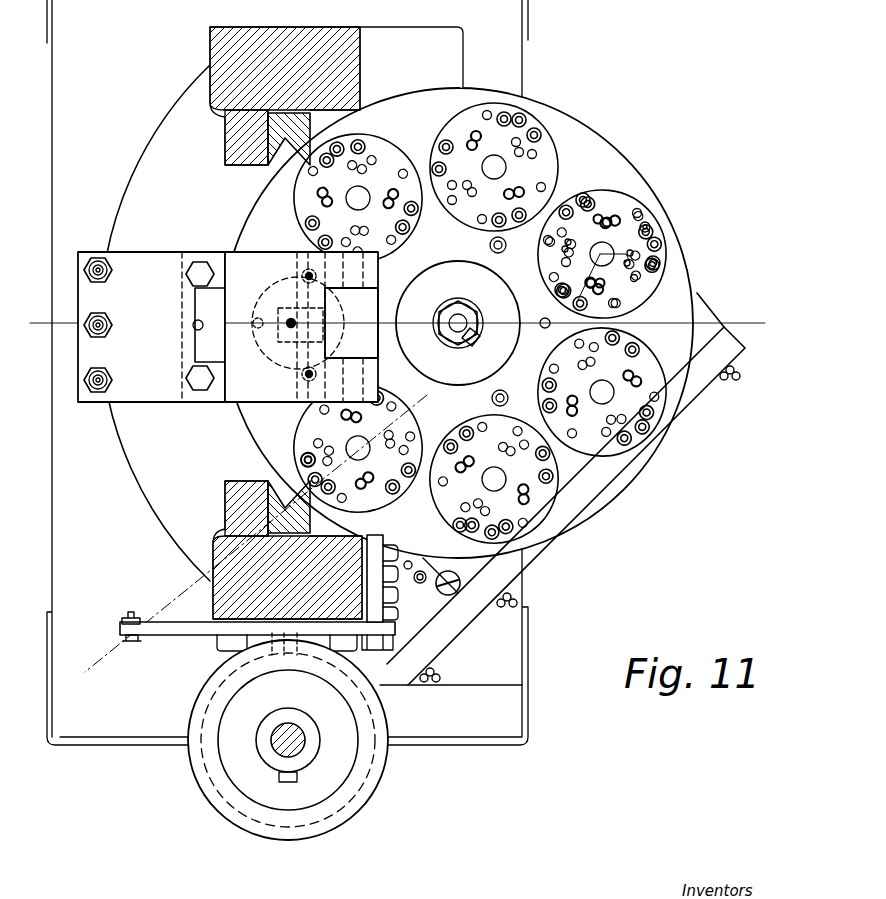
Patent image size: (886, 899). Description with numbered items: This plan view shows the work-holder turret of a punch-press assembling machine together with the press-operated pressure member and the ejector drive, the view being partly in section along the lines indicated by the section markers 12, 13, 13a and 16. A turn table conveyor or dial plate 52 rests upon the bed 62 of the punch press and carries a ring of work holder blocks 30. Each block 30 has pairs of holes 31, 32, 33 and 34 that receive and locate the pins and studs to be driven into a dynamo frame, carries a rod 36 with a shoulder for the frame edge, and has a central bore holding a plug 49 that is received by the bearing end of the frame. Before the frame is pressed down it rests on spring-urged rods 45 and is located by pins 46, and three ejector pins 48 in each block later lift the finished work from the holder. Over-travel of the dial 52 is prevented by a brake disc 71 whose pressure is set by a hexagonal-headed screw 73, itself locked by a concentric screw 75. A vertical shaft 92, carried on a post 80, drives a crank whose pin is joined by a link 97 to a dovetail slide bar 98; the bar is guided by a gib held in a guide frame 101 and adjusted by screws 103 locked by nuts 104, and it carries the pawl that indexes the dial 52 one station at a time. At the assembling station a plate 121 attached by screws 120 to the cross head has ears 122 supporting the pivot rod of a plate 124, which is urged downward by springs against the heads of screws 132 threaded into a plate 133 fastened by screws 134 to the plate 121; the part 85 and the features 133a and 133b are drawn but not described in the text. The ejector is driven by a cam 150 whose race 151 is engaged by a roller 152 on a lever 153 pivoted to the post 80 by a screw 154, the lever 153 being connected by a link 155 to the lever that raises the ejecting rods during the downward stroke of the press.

The section line 12- 12 is at (30, 323).
The section line 13- 13 is at (233, 330).
The section line 13a- 13a is at (673, 320).
The section line 16- 16 is at (427, 395).
The work holder block 30 is at (296, 206).
The holes 31 is at (562, 250).
The holes 32 is at (565, 243).
The holes 33 is at (603, 217).
The holes 34 is at (613, 222).
The rod 36 is at (650, 226).
The rods 45 is at (641, 210).
The pins 46 is at (637, 290).
The ejector pins 48 is at (583, 193).
The plug 49 is at (600, 248).
The dial plate 52 is at (610, 140).
The bed 62 is at (93, 733).
The brake disc 71 is at (463, 373).
The screw 73 is at (472, 340).
The locking screw 75 is at (472, 328).
The post 80 is at (212, 58).
The wedge 85 is at (270, 140).
The vertical shaft 92 is at (268, 744).
The link 97 is at (430, 602).
The slide bar 98 is at (715, 306).
The guide frame 101 is at (742, 348).
The screws 103 is at (738, 374).
The nuts 104 is at (723, 380).
The screws 120 is at (289, 322).
The plate 121 is at (250, 398).
The ears 122 is at (378, 283).
The plate 124 is at (328, 342).
The screws 132 is at (106, 262).
The plate 133 is at (138, 396).
The hole 133a is at (194, 323).
The nut 133b is at (200, 258).
The screws 134 is at (96, 258).
The cam 150 is at (387, 763).
The cam race 151 is at (370, 715).
The cam roller 152 is at (305, 655).
The lever 153 is at (195, 632).
The screw 154 is at (398, 643).
The link 155 is at (135, 644).